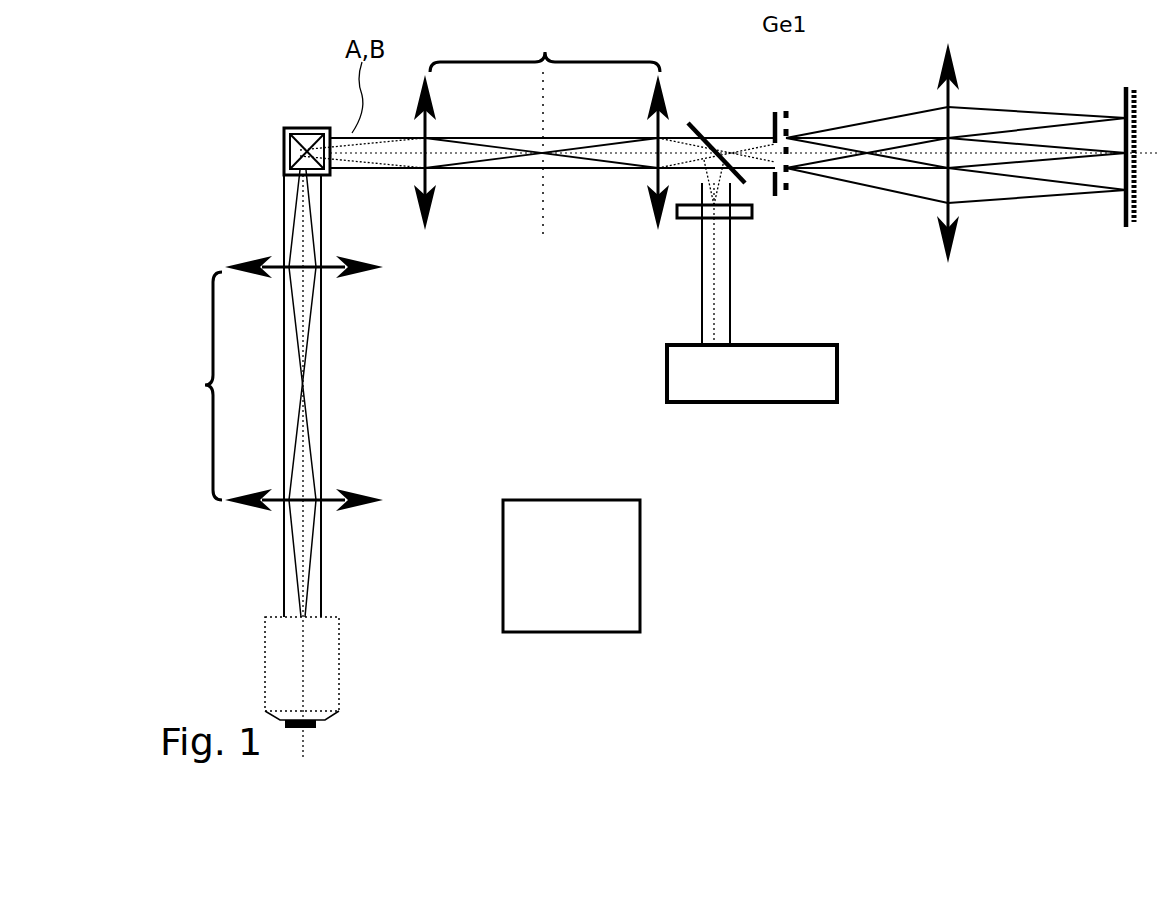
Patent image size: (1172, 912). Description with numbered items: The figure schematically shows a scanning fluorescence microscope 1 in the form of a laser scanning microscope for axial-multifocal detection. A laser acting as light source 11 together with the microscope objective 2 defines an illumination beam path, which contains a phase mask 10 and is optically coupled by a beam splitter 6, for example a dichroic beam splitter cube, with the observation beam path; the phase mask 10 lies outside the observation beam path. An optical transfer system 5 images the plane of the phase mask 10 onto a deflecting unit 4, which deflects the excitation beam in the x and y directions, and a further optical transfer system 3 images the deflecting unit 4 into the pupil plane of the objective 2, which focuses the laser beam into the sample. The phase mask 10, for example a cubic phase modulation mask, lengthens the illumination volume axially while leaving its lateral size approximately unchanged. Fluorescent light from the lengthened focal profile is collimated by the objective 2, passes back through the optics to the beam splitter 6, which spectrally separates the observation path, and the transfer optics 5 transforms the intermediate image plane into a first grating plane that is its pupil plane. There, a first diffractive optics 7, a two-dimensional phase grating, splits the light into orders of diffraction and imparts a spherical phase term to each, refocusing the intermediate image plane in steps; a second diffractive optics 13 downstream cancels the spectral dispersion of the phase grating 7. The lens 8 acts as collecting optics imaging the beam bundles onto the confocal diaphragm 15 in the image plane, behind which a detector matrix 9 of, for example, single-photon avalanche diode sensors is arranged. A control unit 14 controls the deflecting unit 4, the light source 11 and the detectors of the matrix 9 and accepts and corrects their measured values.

The scanning fluorescence microscope 1 is at (893, 538).
The microscope objective 2 is at (265, 664).
The further optical transfer system 3 is at (276, 465).
The deflecting unit 4 is at (296, 126).
The optical transfer system 5 is at (541, 147).
The beam splitter 6 is at (711, 125).
The first diffractive optics 7 is at (778, 110).
The lens 8 is at (940, 54).
The detector matrix 9 is at (1137, 92).
The phase mask 10 is at (757, 219).
The light source 11 is at (756, 405).
The second diffractive optics 13 is at (792, 125).
The control unit 14 is at (590, 581).
The confocal diaphragm 15 is at (1123, 86).